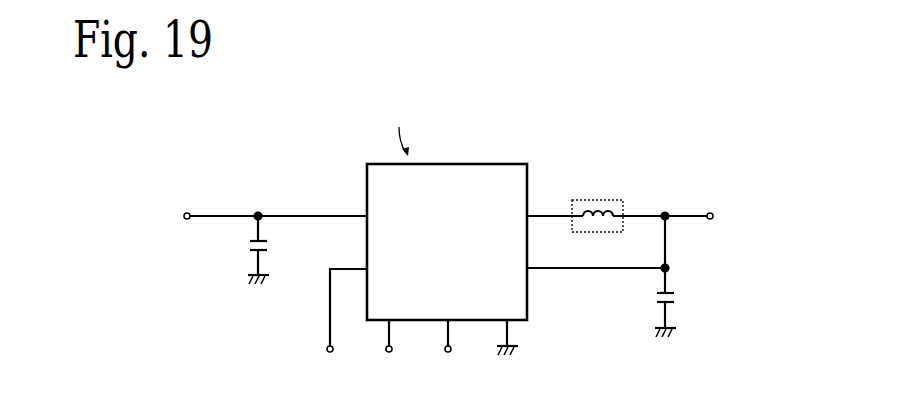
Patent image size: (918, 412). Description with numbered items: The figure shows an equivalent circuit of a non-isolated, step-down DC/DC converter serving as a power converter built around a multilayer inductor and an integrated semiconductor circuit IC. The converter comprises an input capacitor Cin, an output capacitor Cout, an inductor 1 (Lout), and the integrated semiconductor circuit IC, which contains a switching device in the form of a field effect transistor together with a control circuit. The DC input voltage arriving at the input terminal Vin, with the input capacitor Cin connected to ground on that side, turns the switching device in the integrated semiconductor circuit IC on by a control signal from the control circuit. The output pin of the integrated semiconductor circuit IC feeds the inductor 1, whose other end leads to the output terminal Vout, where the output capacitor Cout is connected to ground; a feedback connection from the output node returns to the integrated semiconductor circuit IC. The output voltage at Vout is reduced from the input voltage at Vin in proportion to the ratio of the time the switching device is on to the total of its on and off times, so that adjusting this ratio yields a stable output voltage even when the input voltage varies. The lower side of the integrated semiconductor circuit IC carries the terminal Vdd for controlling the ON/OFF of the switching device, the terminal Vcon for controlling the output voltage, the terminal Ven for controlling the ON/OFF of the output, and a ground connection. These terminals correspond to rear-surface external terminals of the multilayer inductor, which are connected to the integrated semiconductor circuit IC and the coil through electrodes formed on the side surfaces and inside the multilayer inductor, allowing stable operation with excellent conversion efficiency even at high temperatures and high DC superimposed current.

The inductor 1 is at (604, 199).
The integrated semiconductor circuit IC is at (507, 171).
The input capacitor Cin is at (243, 250).
The output capacitor Cout is at (644, 302).
The input terminal Vin is at (257, 216).
The output terminal Vout is at (686, 216).
The terminal for controlling the ON/OFF of the switching device Vdd is at (341, 322).
The terminal for controlling output voltage Vcon is at (389, 348).
The terminal for controlling the ON/OFF of output Ven is at (447, 348).